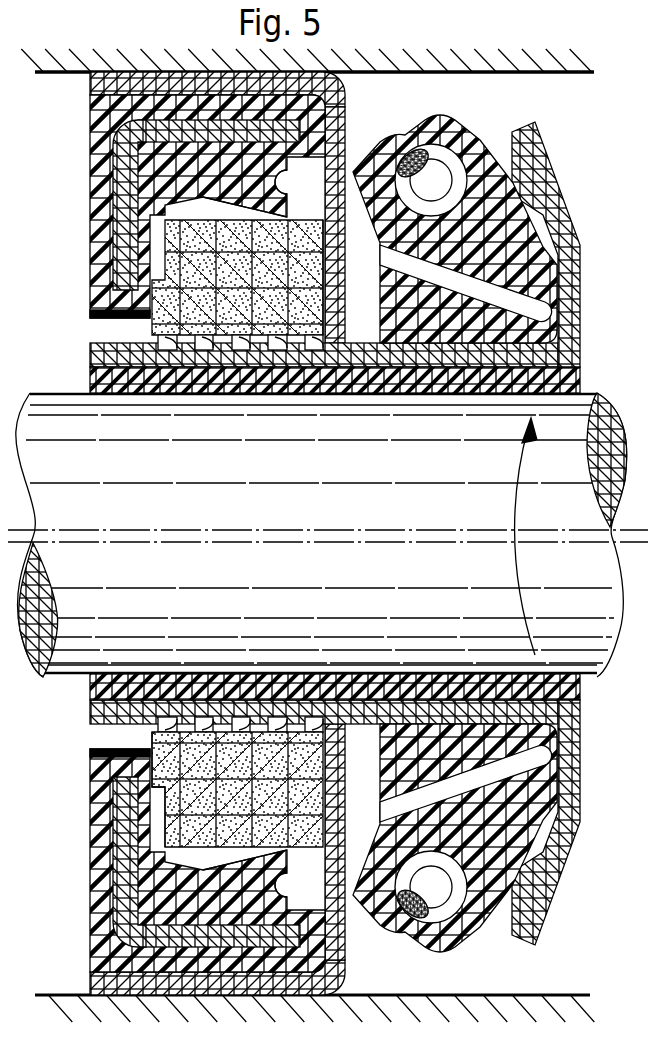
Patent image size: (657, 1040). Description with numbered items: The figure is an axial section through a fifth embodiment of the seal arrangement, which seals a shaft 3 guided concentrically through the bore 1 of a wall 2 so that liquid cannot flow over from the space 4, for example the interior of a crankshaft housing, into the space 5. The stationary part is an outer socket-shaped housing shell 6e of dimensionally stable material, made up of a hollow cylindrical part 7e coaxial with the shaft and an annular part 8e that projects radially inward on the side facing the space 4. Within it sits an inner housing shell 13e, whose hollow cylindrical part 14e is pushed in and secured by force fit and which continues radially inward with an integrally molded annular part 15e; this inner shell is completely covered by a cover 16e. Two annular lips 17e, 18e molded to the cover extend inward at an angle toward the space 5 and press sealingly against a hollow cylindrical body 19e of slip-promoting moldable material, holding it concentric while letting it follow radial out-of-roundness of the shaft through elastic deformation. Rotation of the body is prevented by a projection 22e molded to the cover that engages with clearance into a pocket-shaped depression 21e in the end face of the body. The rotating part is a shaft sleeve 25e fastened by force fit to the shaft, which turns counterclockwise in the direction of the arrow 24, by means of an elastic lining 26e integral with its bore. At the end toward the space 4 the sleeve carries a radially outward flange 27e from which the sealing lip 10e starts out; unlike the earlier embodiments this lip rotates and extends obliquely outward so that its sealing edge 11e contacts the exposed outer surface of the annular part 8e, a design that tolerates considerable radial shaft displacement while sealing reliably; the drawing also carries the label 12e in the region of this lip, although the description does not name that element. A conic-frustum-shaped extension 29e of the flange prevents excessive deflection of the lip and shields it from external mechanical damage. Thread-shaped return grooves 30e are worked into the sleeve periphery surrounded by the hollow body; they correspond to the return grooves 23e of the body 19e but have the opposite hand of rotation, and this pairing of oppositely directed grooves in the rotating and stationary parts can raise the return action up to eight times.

The bore 1 is at (507, 73).
The wall 2 is at (430, 62).
The shaft 3 is at (312, 520).
The space 4 is at (487, 241).
The space 5 is at (218, 207).
The housing shell 6e is at (335, 92).
The hollow cylindrical part 7e is at (107, 85).
The annular part 8e is at (333, 307).
The sealing lip 10e is at (500, 233).
The sealing edge 11e is at (353, 897).
The spring 12e is at (408, 920).
The inner housing shell 13e is at (128, 131).
The hollow cylindrical part 14e is at (208, 150).
The annular part 15e is at (127, 242).
The cover 16e is at (150, 163).
The annular lip 17e is at (188, 222).
The annular lip 18e is at (277, 867).
The hollow cylindrical body 19e is at (150, 308).
The pocket-shaped depression 21e is at (170, 813).
The projection 22e is at (170, 782).
The return grooves 23e is at (324, 368).
The arrow 24 is at (513, 567).
The shaft sleeve 25e is at (363, 380).
The elastic lining 26e is at (397, 683).
The flange 27e is at (570, 743).
The conic-frustum-shaped extension 29e is at (535, 148).
The return grooves 30e is at (200, 350).